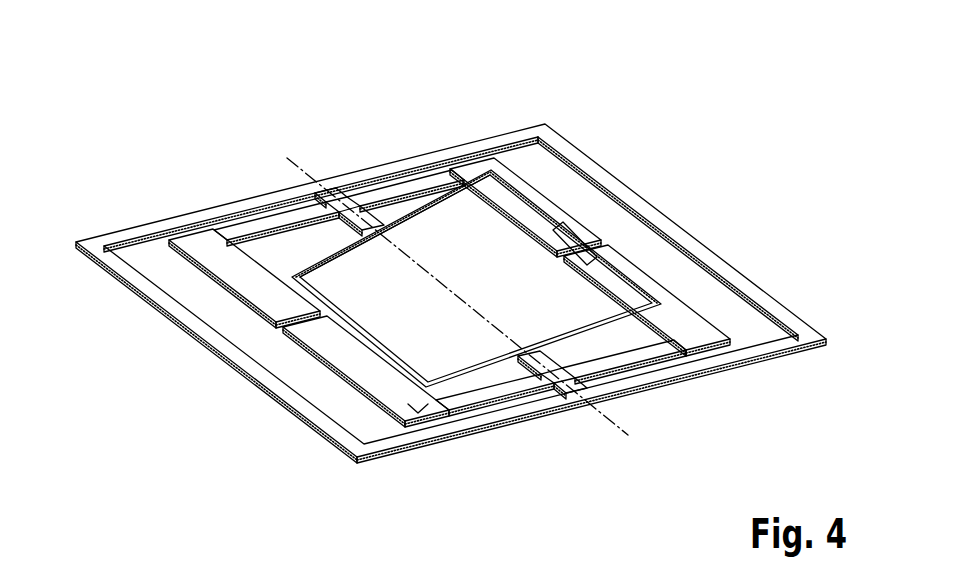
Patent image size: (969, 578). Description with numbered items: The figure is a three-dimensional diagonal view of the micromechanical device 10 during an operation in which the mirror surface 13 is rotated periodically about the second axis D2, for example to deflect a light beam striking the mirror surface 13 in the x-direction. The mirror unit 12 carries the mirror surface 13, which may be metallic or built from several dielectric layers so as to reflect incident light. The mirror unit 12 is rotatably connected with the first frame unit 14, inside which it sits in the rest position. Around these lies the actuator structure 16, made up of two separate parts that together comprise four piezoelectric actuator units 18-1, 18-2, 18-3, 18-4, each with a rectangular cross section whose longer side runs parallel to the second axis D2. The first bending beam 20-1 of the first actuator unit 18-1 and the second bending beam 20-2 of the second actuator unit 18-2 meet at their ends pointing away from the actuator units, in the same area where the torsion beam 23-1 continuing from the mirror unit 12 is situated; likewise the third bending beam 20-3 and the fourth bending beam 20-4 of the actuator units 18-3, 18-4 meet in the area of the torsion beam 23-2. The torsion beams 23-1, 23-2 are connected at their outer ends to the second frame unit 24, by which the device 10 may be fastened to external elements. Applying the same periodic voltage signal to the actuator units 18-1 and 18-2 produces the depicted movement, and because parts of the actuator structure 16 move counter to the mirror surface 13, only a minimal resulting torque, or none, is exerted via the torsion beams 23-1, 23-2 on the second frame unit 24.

The micromechanical device 10 is at (168, 56).
The mirror unit 12 is at (417, 347).
The mirror surface 13 is at (467, 218).
The first frame unit 14 is at (490, 376).
The actuator structure 16 is at (452, 407).
The first piezoelectric actuator unit 18-1 is at (247, 282).
The second piezoelectric actuator unit 18-2 is at (517, 175).
The third piezoelectric actuator unit 18-3 is at (353, 383).
The fourth piezoelectric actuator unit 18-4 is at (683, 313).
The first bending beam 20-1 is at (247, 225).
The second bending beam 20-2 is at (430, 184).
The third bending beam 20-3 is at (495, 388).
The fourth bending beam 20-4 is at (665, 348).
The torsion beam 23-1 is at (340, 192).
The torsion beam 23-2 is at (562, 390).
The second frame unit 24 is at (134, 228).
The second axis D2 is at (630, 437).